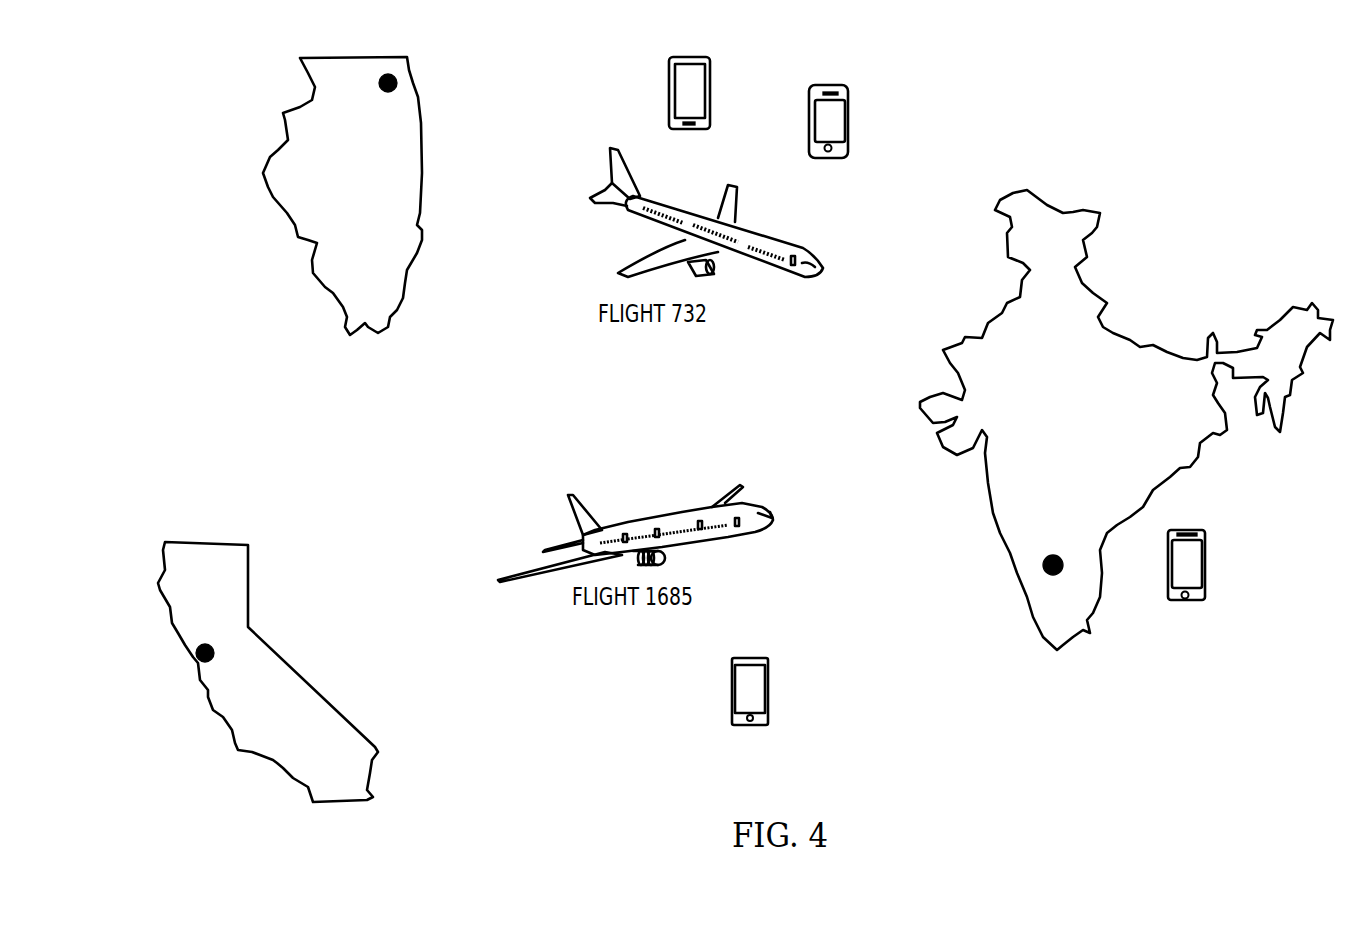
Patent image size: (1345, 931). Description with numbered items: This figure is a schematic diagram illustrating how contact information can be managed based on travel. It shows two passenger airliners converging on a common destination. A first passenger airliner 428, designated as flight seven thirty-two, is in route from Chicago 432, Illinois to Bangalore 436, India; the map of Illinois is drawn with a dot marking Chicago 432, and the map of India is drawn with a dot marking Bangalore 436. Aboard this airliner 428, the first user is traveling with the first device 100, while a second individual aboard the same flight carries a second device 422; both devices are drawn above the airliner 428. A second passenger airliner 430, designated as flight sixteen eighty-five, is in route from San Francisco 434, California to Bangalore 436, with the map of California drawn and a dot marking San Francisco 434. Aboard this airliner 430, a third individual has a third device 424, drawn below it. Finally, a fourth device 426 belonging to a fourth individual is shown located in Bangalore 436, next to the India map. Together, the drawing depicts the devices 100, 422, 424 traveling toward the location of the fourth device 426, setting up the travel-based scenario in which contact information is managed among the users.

The first device 100 is at (808, 122).
The second device 422 is at (668, 93).
The third device 424 is at (731, 690).
The fourth device 426 is at (1206, 563).
The passenger airliner 428 is at (773, 237).
The passenger airliner 430 is at (567, 497).
The Chicago 432 is at (398, 77).
The San Francisco 434 is at (196, 659).
The Bangalore 436 is at (1047, 569).